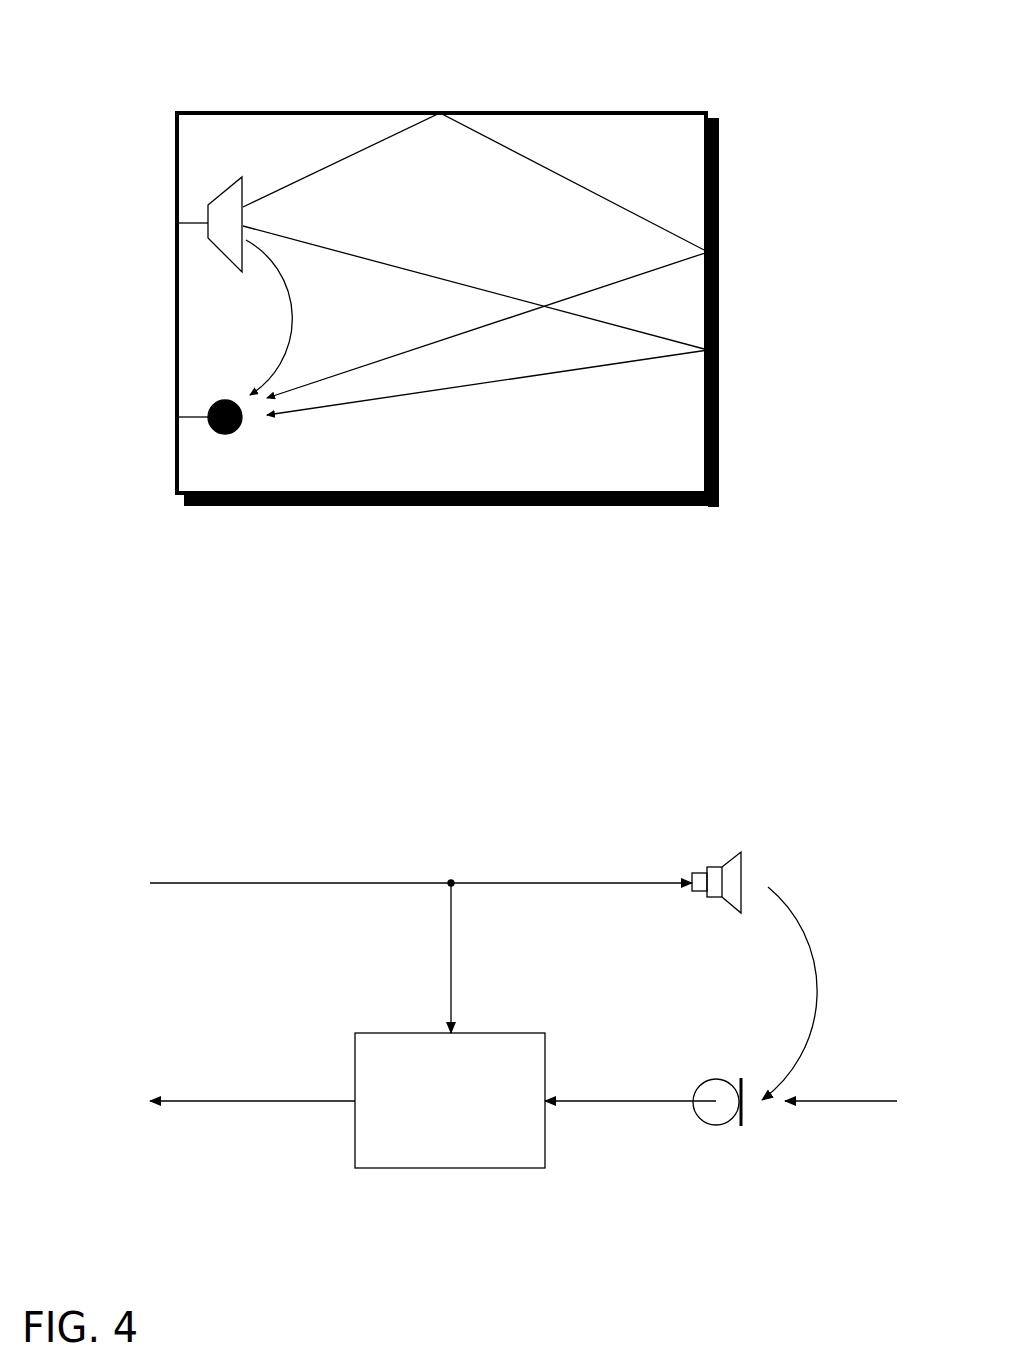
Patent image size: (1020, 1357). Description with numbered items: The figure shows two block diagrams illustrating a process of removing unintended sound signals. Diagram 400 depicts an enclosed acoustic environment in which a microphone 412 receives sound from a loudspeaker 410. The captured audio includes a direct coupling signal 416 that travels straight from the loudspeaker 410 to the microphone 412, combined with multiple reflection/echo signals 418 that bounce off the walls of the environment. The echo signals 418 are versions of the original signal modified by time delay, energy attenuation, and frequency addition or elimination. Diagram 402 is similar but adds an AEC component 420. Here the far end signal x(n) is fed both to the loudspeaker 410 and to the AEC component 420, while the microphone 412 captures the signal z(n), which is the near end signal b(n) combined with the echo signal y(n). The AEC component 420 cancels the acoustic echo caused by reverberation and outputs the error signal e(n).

The diagram 400 is at (127, 37).
The diagram 402 is at (215, 778).
The loudspeaker 410 is at (228, 225).
The microphone 412 is at (215, 400).
The direct coupling signal 416 is at (295, 325).
The reflection/echo signals 418 is at (413, 355).
The AEC component 420 is at (450, 1100).